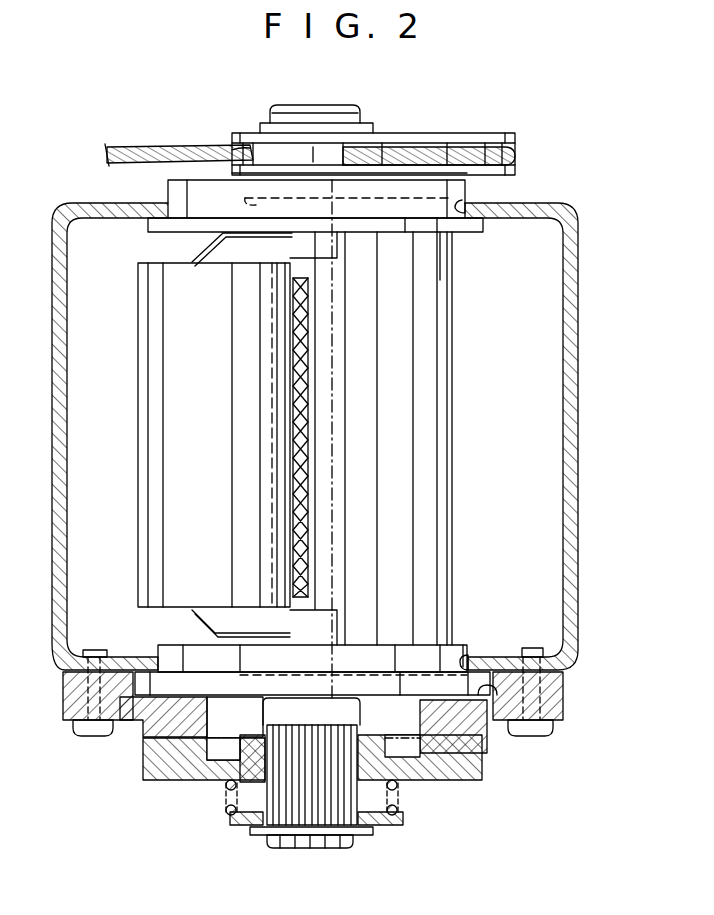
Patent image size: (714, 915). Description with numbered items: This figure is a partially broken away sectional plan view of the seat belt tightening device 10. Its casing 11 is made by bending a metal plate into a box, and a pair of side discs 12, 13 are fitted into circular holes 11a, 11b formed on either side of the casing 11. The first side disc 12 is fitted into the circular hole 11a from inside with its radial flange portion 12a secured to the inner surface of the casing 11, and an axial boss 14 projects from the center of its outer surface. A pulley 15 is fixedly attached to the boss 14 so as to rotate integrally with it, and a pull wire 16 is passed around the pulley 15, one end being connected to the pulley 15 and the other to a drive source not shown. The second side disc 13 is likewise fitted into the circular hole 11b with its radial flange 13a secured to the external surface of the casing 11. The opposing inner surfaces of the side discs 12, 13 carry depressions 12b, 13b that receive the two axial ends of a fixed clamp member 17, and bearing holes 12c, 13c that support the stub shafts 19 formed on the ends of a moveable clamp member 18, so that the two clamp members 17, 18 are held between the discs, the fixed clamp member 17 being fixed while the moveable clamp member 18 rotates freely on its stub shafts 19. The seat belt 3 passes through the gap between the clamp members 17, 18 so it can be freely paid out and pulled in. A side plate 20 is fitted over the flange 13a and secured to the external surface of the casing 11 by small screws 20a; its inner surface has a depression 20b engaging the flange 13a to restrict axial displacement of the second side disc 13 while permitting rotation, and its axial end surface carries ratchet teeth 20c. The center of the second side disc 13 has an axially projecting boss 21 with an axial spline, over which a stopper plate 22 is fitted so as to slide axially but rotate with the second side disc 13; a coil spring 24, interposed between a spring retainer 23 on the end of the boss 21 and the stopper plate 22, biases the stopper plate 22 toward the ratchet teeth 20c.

The seat belt 3 is at (308, 487).
The seat belt tightening device 10 is at (564, 152).
The casing 11 is at (584, 314).
The circular hole 11a is at (470, 203).
The circular hole 11b is at (465, 652).
The first side disc 12 is at (168, 192).
The radial flange portion 12a is at (148, 226).
The depression 12b is at (445, 222).
The bearing hole 12c is at (240, 205).
The second side disc 13 is at (158, 643).
The radial flange 13a is at (137, 687).
The depression 13b is at (417, 667).
The bearing hole 13c is at (265, 668).
The axial boss 14 is at (362, 122).
The pulley 15 is at (436, 134).
The pull wire 16 is at (137, 143).
The fixed clamp member 17 is at (449, 388).
The moveable clamp member 18 is at (138, 408).
The stub shafts 19 is at (240, 215).
The side plate 20 is at (563, 707).
The small screws 20a is at (530, 736).
The depression 20b is at (492, 697).
The ratchet teeth 20c is at (437, 752).
The boss 21 is at (337, 813).
The stopper plate 22 is at (167, 780).
The spring retainer 23 is at (245, 834).
The coil spring 24 is at (226, 790).